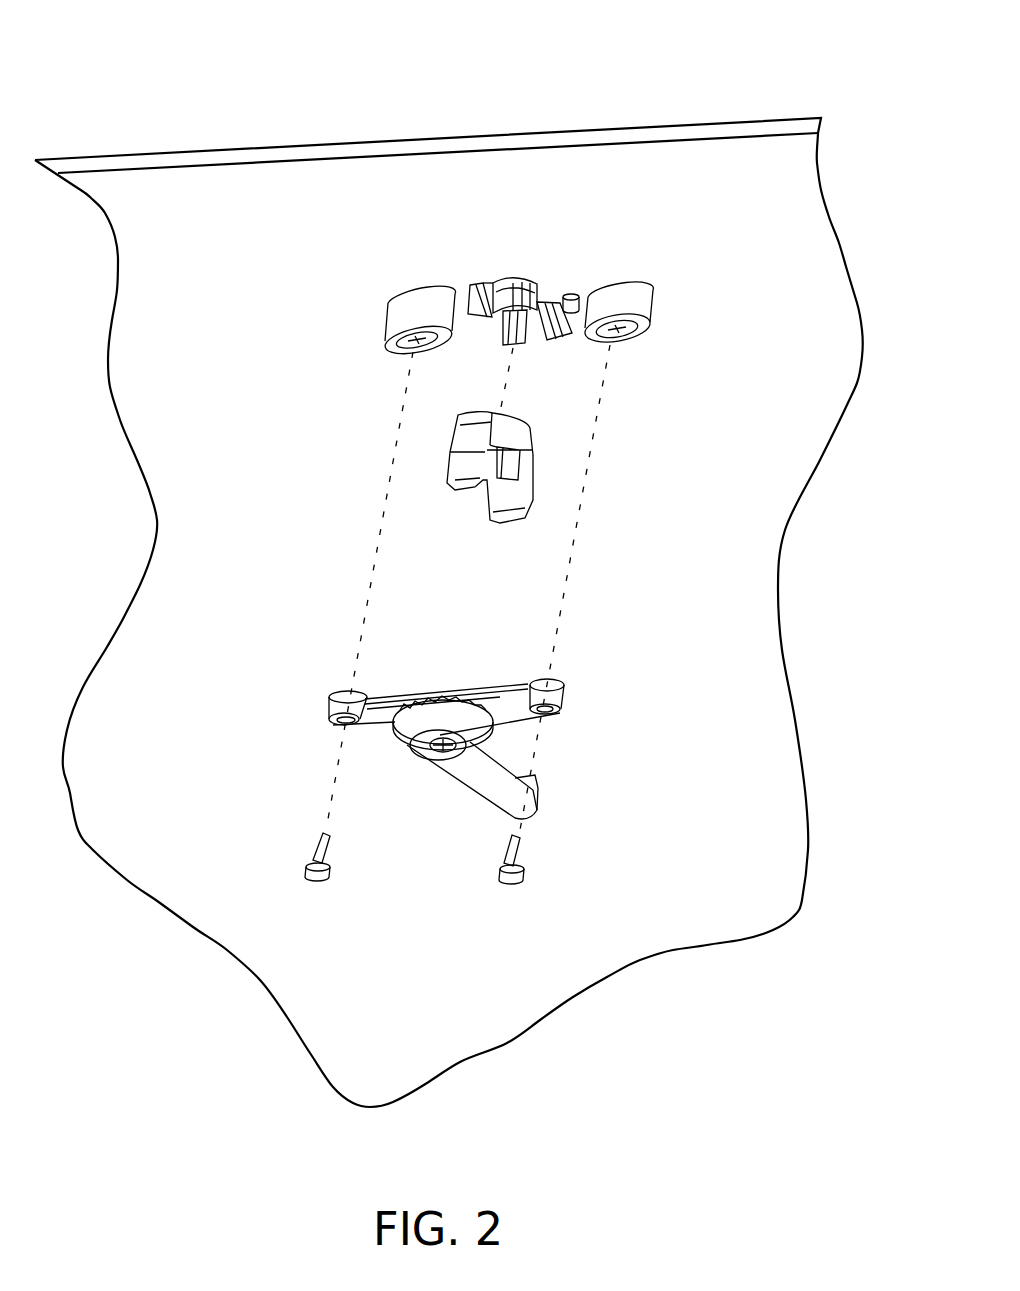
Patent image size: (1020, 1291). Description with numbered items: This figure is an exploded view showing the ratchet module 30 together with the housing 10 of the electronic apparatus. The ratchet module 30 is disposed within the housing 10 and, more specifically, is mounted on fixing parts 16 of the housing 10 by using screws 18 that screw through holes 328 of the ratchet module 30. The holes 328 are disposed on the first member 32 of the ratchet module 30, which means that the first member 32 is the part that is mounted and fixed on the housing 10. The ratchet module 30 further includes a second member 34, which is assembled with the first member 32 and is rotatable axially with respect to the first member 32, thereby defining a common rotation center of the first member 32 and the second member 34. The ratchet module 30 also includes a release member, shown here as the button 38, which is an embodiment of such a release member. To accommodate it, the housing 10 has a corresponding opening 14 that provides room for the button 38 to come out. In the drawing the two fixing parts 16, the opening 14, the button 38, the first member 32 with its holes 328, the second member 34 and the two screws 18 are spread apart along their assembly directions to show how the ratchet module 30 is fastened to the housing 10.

The housing 10 is at (444, 145).
The opening 14 is at (511, 282).
The fixing parts 16 is at (420, 308).
The screws 18 is at (317, 881).
The ratchet module 30 is at (663, 437).
The first member 32 is at (440, 661).
The second member 34 is at (477, 773).
The button 38 is at (533, 462).
The holes 328 is at (342, 727).